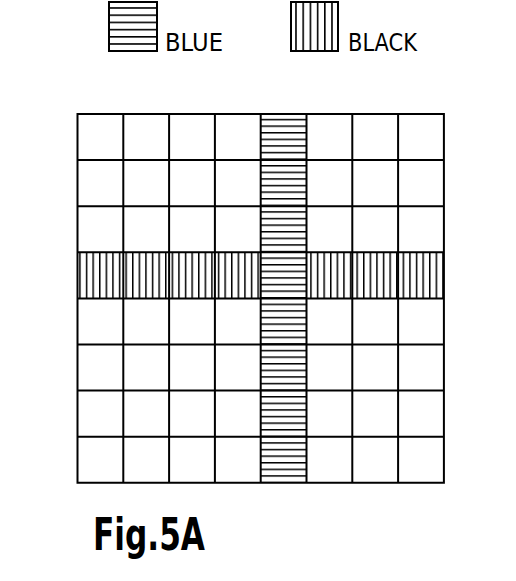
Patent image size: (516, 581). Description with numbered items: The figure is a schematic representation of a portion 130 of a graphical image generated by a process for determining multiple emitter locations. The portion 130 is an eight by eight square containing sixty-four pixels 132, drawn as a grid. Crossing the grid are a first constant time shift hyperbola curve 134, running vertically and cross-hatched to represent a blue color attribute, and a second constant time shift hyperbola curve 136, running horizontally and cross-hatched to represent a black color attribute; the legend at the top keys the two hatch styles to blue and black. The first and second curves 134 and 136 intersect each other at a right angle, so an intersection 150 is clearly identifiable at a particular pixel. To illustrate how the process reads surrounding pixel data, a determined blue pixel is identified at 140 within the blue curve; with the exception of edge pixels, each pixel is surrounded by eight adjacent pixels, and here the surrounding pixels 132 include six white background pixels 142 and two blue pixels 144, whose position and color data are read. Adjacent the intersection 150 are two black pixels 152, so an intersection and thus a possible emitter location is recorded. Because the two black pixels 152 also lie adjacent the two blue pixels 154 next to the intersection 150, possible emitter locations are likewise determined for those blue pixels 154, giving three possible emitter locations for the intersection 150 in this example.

The portion of the graphical image 130 is at (253, 105).
The first constant time shift hyperbola curve 134 is at (286, 137).
The second constant time shift hyperbola curve 136 is at (91, 277).
The intersection 150 is at (287, 270).
The pixels 132 is at (438, 373).
The black pixels 152 is at (237, 265).
The white pixels 142 is at (224, 330).
The blue pixels 144 is at (267, 325).
The blue pixel 140 is at (288, 375).
The blue pixels 154 is at (272, 233).